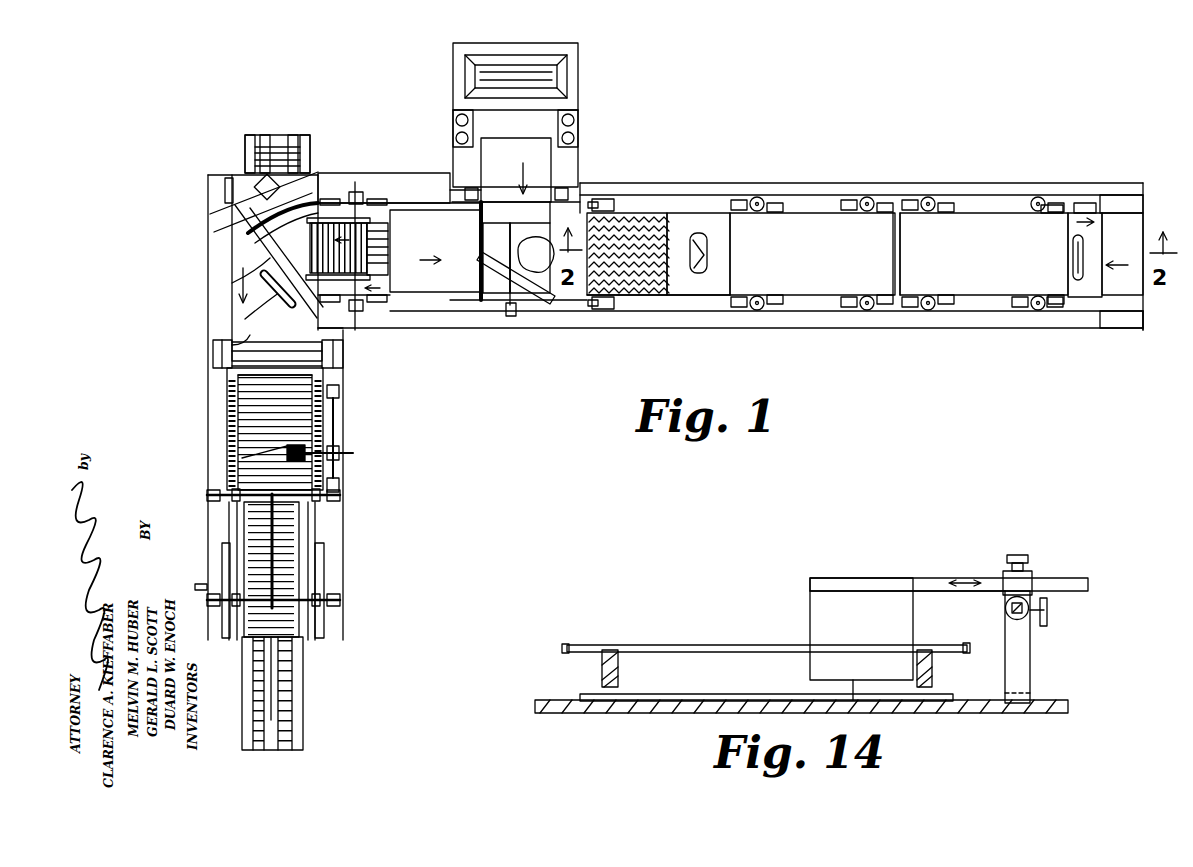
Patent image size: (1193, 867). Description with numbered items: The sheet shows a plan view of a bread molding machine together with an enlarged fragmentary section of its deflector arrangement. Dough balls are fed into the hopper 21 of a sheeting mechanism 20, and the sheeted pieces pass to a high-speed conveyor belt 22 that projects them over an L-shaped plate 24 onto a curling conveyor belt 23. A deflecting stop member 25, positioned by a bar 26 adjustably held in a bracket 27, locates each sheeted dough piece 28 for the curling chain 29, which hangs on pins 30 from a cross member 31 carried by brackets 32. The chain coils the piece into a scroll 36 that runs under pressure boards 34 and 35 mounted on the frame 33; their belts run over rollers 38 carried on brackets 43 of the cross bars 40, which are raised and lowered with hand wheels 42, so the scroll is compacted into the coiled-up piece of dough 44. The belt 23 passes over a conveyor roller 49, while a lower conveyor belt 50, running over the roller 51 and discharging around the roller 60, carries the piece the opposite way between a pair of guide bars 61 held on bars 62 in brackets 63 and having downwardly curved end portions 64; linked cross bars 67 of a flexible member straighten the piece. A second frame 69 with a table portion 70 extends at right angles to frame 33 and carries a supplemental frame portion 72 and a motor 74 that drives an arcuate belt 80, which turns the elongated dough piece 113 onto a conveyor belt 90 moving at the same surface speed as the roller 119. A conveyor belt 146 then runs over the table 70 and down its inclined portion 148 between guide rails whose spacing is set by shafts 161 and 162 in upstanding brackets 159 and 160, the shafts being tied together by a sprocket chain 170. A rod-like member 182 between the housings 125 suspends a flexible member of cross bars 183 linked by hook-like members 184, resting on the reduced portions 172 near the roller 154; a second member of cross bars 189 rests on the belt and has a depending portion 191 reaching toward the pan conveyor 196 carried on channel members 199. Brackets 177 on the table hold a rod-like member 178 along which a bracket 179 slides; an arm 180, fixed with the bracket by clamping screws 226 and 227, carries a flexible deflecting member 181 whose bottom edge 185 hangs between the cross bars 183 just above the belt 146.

In FIG. 1, the sheeting mechanism 20 is at (485, 112).
In FIG. 1, the hopper 21 is at (535, 60).
In FIG. 1, the conveyor belt 22 is at (572, 180).
In FIG. 1, the curling conveyor belt 23 is at (415, 210).
In FIG. 1, the L-shaped plate 24 is at (492, 300).
In FIG. 1, the deflecting stop member 25 is at (552, 312).
In FIG. 1, the bar 26 is at (516, 317).
In FIG. 1, the bracket 27 is at (500, 305).
In FIG. 1, the sheeted dough piece 28 is at (534, 247).
In FIG. 1, the curling chain 29 is at (652, 218).
In FIG. 1, the pins 30 is at (636, 300).
In FIG. 1, the cross member 31 is at (600, 212).
In FIG. 1, the brackets 32 is at (605, 312).
In FIG. 1, the frame 33 is at (805, 197).
In FIG. 1, the pressure board 34 is at (812, 300).
In FIG. 1, the pressure board 35 is at (982, 297).
In FIG. 1, the scroll 36 is at (706, 282).
In FIG. 1, the rollers 38 is at (1054, 203).
In FIG. 1, the cross bars 40 is at (762, 197).
In FIG. 1, the hand wheels 42 is at (942, 200).
In FIG. 1, the brackets 43 is at (740, 198).
In FIG. 1, the compacted coiled up piece of dough 44 is at (1074, 256).
In FIG. 1, the conveyor roller 49 is at (1086, 203).
In FIG. 1, the conveyor belt 50 is at (385, 215).
In FIG. 1, the roller 51 is at (1143, 318).
In FIG. 1, the roller 60 is at (334, 200).
In FIG. 1, the guide bars 61 is at (388, 220).
In FIG. 1, the bars 62 is at (372, 215).
In FIG. 1, the brackets 63 is at (357, 192).
In FIG. 1, the downwardly curved end portions 64 is at (308, 216).
In FIG. 1, the cross bars 67 is at (388, 247).
In FIG. 1, the frame 69 is at (210, 410).
In FIG. 1, the table portion 70 is at (212, 237).
In FIG. 14, the table portion 70 is at (720, 714).
In FIG. 1, the frame portion 72 is at (218, 212).
In FIG. 1, the motor 74 is at (250, 185).
In FIG. 1, the arcuate belt 80 is at (242, 250).
In FIG. 1, the conveyor belt 90 is at (235, 276).
In FIG. 1, the dough piece 113 is at (258, 296).
In FIG. 1, the roller 119 is at (248, 342).
In FIG. 1, the housings 125 is at (212, 351).
In FIG. 1, the conveyor belt 146 is at (240, 516).
In FIG. 14, the conveyor belt 146 is at (704, 694).
In FIG. 1, the downwardly inclined portion 148 is at (316, 570).
In FIG. 1, the roller 154 is at (245, 382).
In FIG. 1, the upstanding brackets 159 is at (340, 603).
In FIG. 1, the upstanding brackets 160 is at (207, 495).
In FIG. 1, the shaft 161 is at (340, 593).
In FIG. 1, the shaft 162 is at (242, 488).
In FIG. 1, the sprocket chain 170 is at (327, 555).
In FIG. 14, the reduced portion 172 is at (602, 668).
In FIG. 1, the brackets 177 is at (340, 391).
In FIG. 14, the brackets 177 is at (1030, 674).
In FIG. 1, the rod-like member 178 is at (336, 418).
In FIG. 14, the rod-like member 178 is at (1005, 609).
In FIG. 1, the bracket 179 is at (340, 455).
In FIG. 14, the bracket 179 is at (1030, 580).
In FIG. 1, the arm 180 is at (353, 452).
In FIG. 14, the arm 180 is at (925, 578).
In FIG. 1, the flexible deflecting member 181 is at (258, 453).
In FIG. 14, the flexible deflecting member 181 is at (832, 598).
In FIG. 1, the rod-like member 182 is at (270, 348).
In FIG. 1, the cross bars 183 is at (262, 420).
In FIG. 14, the cross bars 183 is at (703, 645).
In FIG. 14, the hook-like members 184 is at (567, 644).
In FIG. 14, the bottom edge 185 is at (853, 695).
In FIG. 1, the cross bars 189 is at (275, 520).
In FIG. 1, the depending portion 191 is at (292, 645).
In FIG. 1, the pan conveyor 196 is at (284, 750).
In FIG. 1, the longitudinal channel members 199 is at (305, 690).
In FIG. 14, the clamping screw 226 is at (1047, 613).
In FIG. 14, the clamping screw 227 is at (1015, 556).